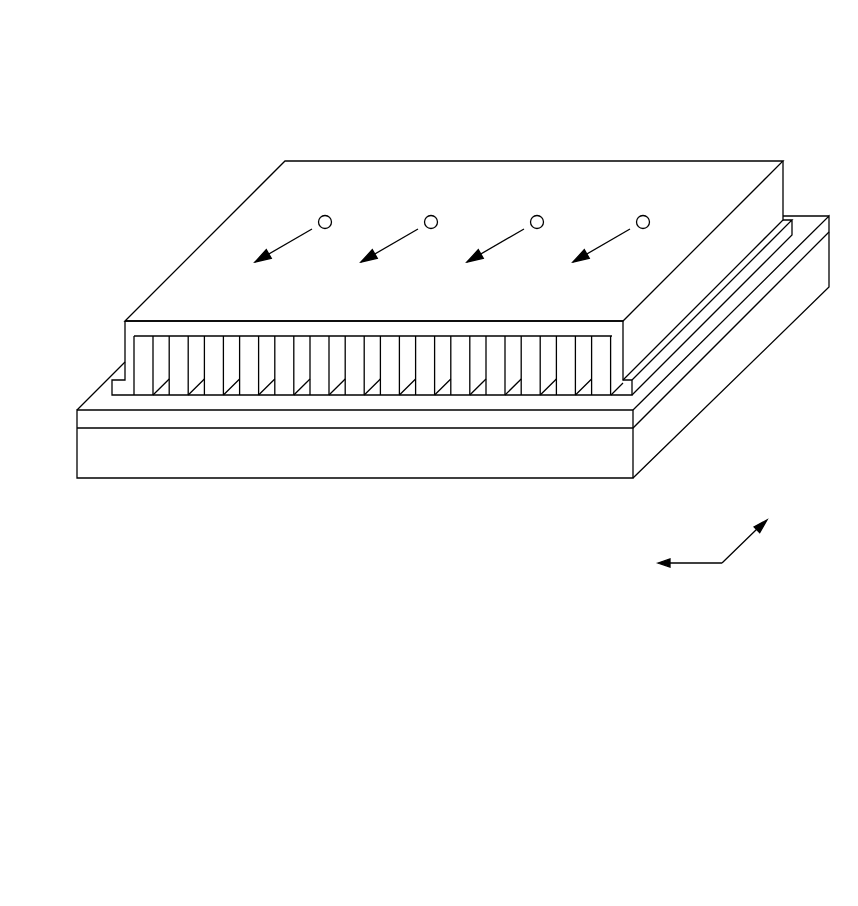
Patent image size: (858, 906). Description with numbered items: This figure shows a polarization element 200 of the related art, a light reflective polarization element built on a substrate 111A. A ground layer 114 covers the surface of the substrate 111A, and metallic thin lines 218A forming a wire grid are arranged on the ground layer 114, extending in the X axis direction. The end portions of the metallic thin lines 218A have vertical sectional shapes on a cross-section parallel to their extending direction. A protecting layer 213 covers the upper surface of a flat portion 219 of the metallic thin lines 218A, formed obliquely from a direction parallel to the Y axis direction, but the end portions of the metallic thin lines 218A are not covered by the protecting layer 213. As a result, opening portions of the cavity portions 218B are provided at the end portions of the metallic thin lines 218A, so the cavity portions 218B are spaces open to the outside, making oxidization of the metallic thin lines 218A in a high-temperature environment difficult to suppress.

The polarization element 200 is at (503, 85).
The protecting layer 213 is at (545, 182).
The flat portion 219 is at (157, 330).
The metallic thin lines 218A is at (178, 393).
The cavity portions 218B is at (163, 397).
The ground layer 114 is at (617, 417).
The substrate 111A is at (617, 455).